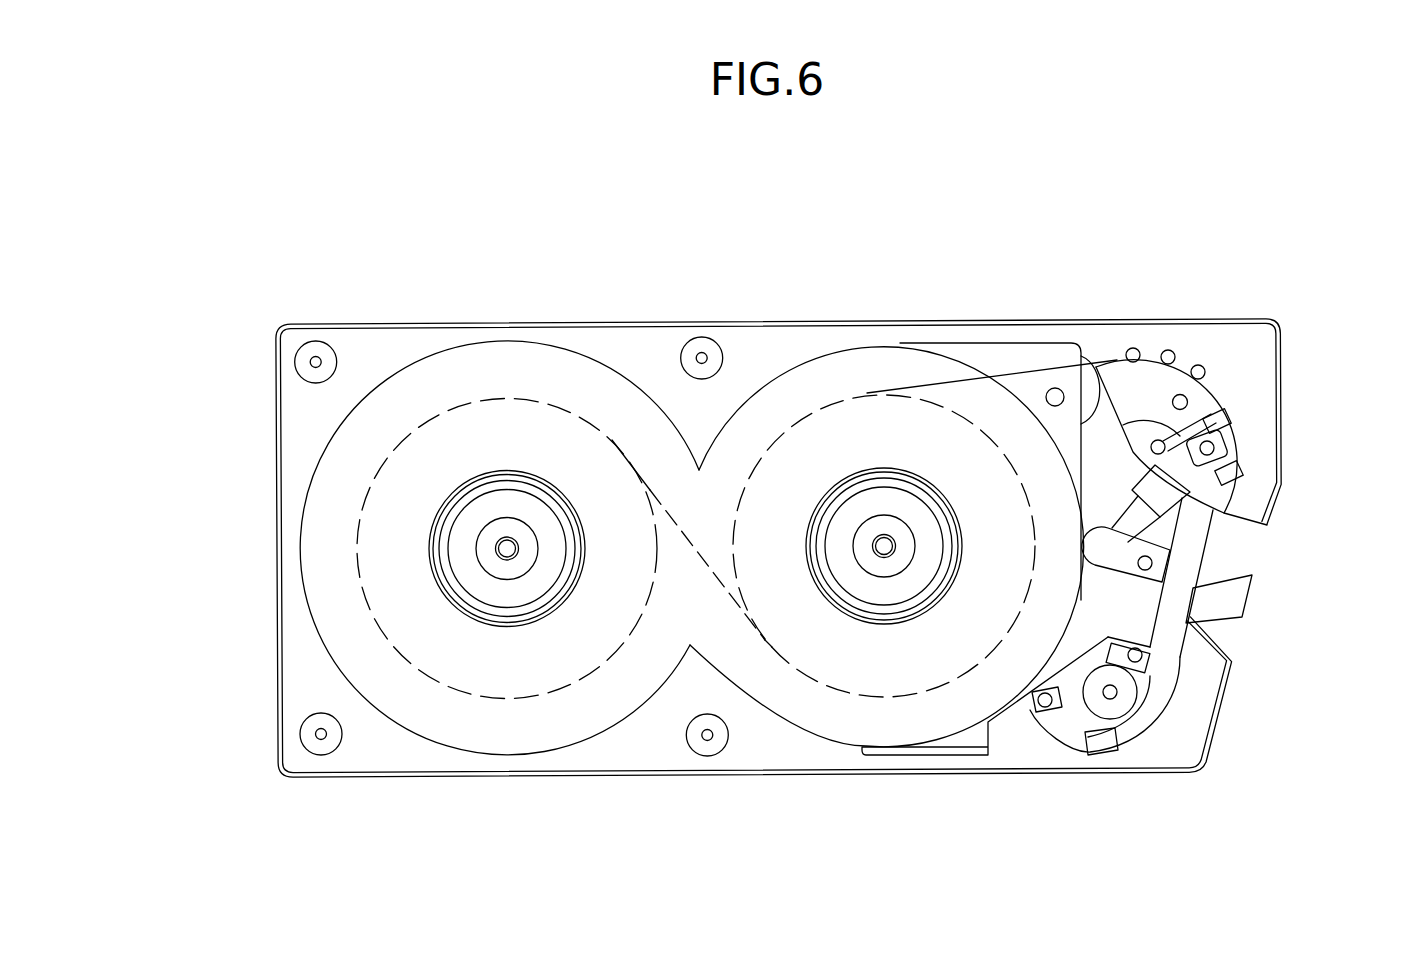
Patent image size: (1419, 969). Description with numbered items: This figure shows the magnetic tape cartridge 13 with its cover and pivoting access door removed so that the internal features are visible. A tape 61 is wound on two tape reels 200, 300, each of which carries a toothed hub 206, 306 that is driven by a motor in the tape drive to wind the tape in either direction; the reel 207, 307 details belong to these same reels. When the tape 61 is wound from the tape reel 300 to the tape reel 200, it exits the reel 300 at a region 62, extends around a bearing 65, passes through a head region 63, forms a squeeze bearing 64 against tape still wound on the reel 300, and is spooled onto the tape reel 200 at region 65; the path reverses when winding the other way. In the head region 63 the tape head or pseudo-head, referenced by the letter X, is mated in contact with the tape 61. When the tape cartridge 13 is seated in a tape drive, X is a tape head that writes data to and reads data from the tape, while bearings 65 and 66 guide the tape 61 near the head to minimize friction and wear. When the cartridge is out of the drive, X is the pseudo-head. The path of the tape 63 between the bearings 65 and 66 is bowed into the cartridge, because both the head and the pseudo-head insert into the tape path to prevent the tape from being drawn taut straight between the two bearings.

The tape cartridge 13 is at (403, 321).
The tape 61 is at (1032, 373).
The region 62 is at (867, 393).
The head region 63 is at (1197, 620).
The squeeze bearing 64 is at (772, 647).
The bearing 65 is at (612, 437).
The bearing 66 is at (1050, 737).
The tape head or pseudo-head X is at (1235, 590).
The tape reel 200 is at (438, 581).
The toothed hub 206 is at (517, 574).
The supply reel flange 207 is at (483, 607).
The tape reel 300 is at (835, 607).
The toothed hub 306 is at (910, 595).
The take-up reel flange 307 is at (877, 605).